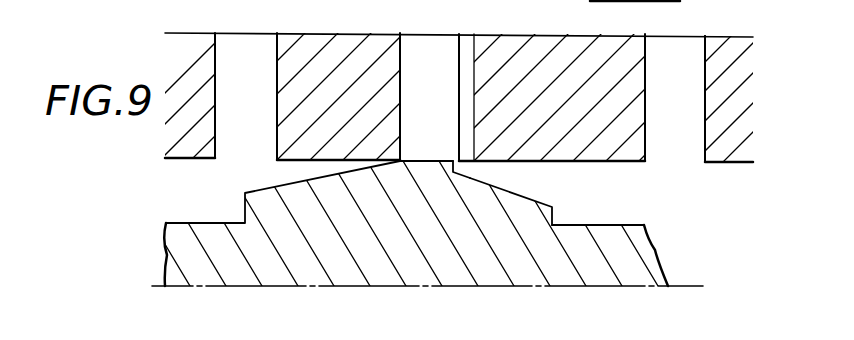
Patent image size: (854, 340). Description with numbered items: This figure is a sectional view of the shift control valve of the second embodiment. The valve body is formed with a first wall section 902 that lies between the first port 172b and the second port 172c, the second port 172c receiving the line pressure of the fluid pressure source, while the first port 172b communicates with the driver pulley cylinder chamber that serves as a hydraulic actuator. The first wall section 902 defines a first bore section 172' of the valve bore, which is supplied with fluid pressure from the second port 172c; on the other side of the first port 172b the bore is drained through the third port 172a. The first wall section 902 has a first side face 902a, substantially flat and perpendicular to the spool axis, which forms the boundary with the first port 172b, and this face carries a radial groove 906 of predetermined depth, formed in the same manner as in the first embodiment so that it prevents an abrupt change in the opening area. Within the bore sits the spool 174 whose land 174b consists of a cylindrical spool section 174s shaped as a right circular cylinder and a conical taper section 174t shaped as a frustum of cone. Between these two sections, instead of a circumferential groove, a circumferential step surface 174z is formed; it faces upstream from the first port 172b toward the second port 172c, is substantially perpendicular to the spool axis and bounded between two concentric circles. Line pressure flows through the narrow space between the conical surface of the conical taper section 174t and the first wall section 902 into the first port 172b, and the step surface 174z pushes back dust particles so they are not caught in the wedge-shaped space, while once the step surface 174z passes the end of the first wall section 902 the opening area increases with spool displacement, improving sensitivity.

The third port 172a is at (237, 45).
The first port 172b is at (434, 42).
The second port 172c is at (676, 45).
The first bore section 172' is at (471, 117).
The spool 174 is at (191, 232).
The land 174b is at (386, 0).
The cylindrical spool section 174s is at (425, 158).
The circumferential step surface 174z is at (455, 168).
The conical taper section 174t is at (537, 203).
The first wall section 902 is at (546, 45).
The first side face 902a is at (457, 50).
The radial groove 906 is at (468, 71).